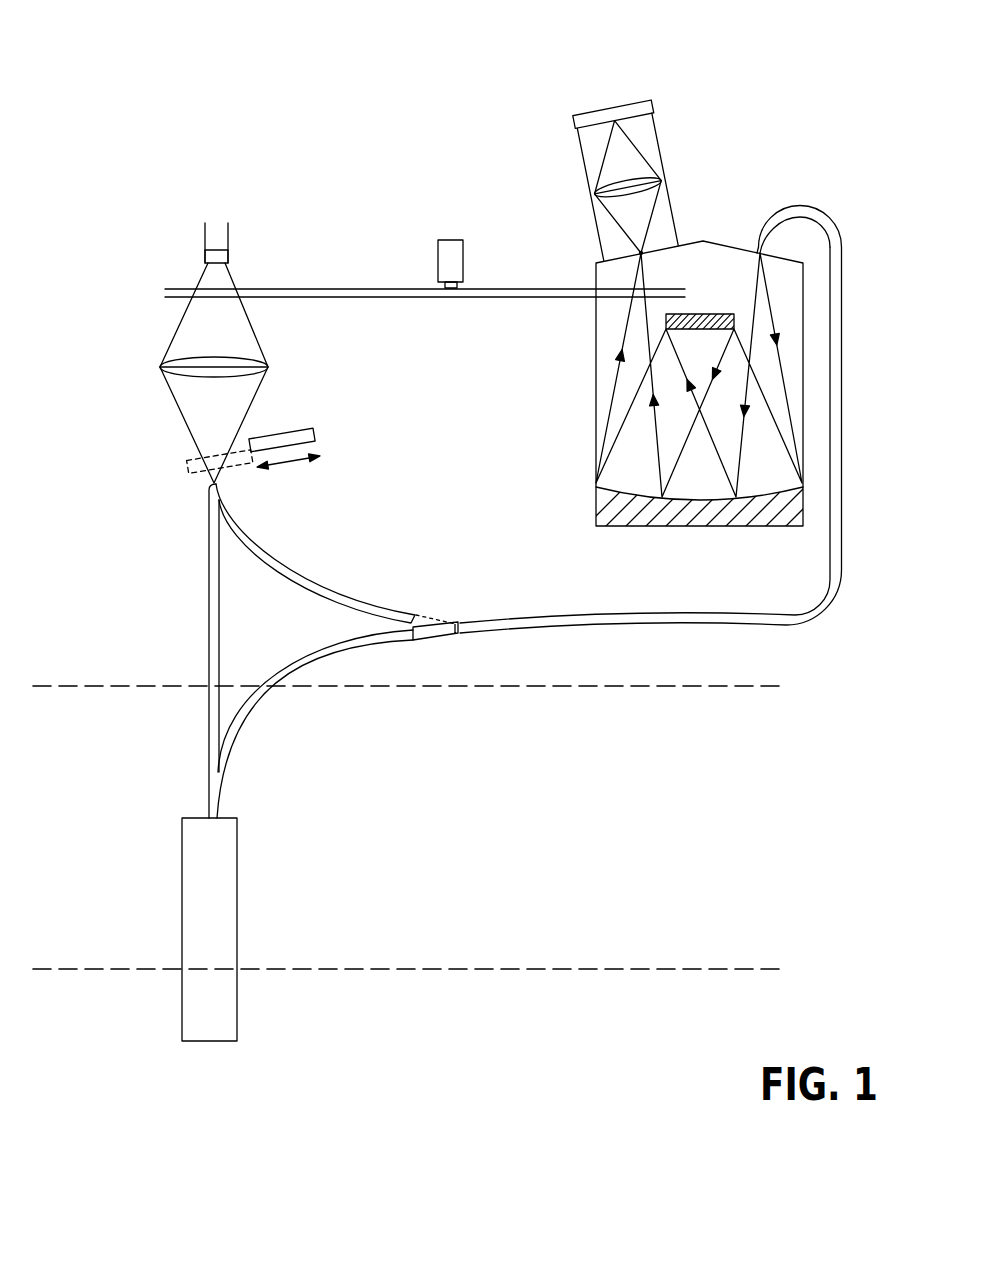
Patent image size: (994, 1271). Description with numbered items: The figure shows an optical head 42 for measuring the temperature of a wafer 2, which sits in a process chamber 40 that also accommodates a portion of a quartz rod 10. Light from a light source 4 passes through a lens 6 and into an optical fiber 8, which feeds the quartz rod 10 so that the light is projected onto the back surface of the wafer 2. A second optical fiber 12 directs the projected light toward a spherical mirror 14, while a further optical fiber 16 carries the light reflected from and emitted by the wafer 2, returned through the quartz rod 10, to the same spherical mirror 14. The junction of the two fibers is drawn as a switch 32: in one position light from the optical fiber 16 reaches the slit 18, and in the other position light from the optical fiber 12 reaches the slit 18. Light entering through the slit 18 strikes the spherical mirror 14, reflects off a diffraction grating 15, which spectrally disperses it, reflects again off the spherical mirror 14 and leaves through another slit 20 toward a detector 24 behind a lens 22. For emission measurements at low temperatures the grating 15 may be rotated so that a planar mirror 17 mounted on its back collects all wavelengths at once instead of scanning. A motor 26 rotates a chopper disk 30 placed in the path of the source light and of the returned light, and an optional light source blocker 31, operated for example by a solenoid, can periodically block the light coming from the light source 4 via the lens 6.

The wafer 2 is at (298, 1053).
The light source 4 is at (207, 260).
The lens 6 is at (197, 378).
The optical fiber 8 is at (208, 762).
The quartz rod 10 is at (205, 898).
The second optical fiber 12 is at (318, 573).
The spherical mirror 14 is at (677, 527).
The diffraction grating 15 is at (697, 330).
The further optical fiber 16 is at (362, 648).
The planar mirror 17 is at (682, 312).
The slit 18 is at (757, 250).
The slit 20 is at (638, 252).
The collimating lens 22 is at (630, 185).
The detector 24 is at (608, 108).
The motor 26 is at (449, 250).
The chopper disk 30 is at (316, 297).
The light source blocker 31 is at (285, 433).
The switch 32 is at (428, 641).
The process chamber 40 is at (571, 947).
The optical head 42 is at (104, 712).